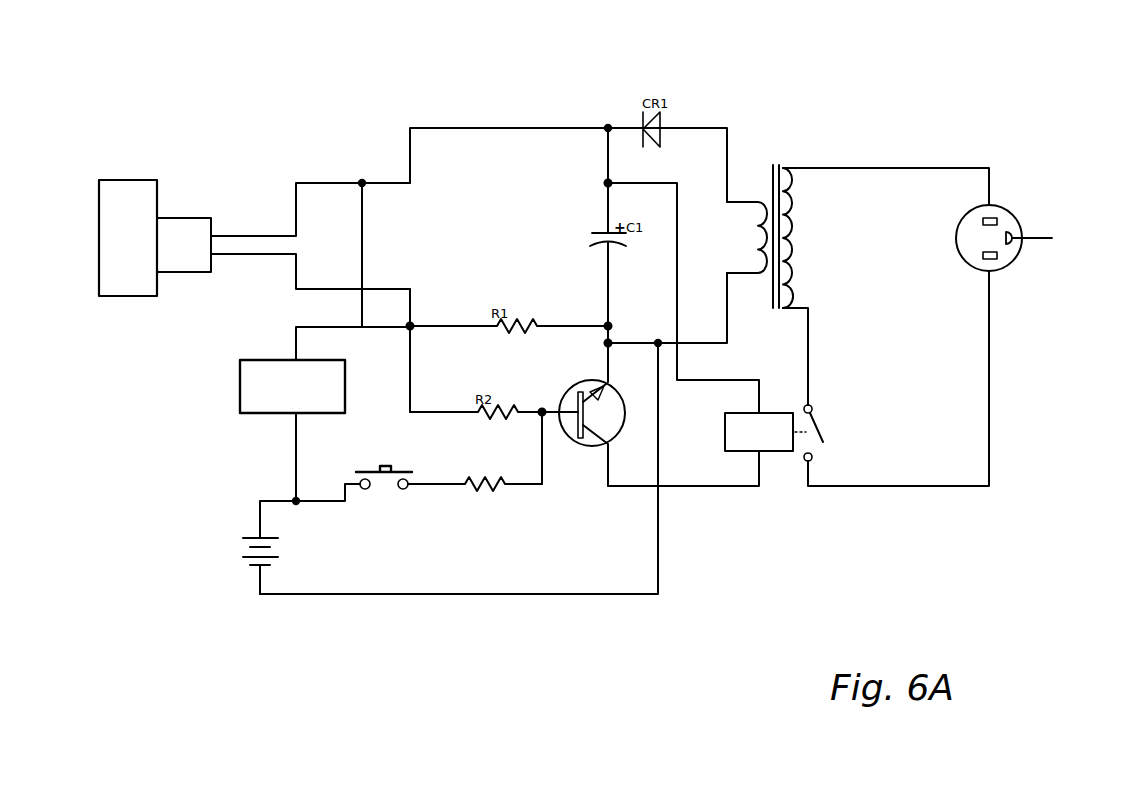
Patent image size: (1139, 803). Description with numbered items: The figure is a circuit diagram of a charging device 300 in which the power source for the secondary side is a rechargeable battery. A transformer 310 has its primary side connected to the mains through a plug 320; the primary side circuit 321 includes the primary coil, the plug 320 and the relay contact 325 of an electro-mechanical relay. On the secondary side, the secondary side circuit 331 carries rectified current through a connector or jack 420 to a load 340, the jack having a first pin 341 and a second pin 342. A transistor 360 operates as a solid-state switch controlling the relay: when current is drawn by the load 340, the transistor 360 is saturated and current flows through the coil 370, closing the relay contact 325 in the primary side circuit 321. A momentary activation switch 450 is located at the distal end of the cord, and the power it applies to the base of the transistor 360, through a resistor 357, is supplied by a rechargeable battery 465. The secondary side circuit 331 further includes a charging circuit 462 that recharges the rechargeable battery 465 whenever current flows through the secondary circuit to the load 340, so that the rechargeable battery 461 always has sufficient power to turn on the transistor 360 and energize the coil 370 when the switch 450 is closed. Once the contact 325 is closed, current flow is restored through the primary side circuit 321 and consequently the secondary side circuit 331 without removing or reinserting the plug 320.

The charging device 300 is at (932, 75).
The transformer 310 is at (797, 153).
The plug 320 is at (1023, 225).
The primary side circuit 321 is at (989, 410).
The relay contact 325 is at (846, 442).
The secondary side circuit 331 is at (472, 128).
The load 340 is at (108, 180).
The first pin 341 is at (225, 236).
The second pin 342 is at (243, 255).
The resistor 357 is at (497, 490).
The transistor 360 is at (578, 455).
The coil 370 is at (725, 427).
The jack 420 is at (183, 218).
The activation switch 450 is at (400, 472).
The rechargeable battery 461 is at (481, 597).
The charging circuit 462 is at (240, 388).
The rechargeable battery 465 is at (245, 568).